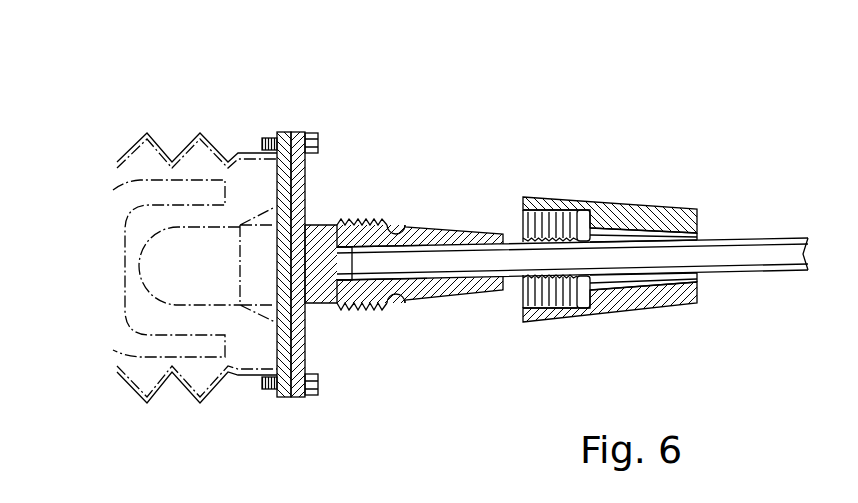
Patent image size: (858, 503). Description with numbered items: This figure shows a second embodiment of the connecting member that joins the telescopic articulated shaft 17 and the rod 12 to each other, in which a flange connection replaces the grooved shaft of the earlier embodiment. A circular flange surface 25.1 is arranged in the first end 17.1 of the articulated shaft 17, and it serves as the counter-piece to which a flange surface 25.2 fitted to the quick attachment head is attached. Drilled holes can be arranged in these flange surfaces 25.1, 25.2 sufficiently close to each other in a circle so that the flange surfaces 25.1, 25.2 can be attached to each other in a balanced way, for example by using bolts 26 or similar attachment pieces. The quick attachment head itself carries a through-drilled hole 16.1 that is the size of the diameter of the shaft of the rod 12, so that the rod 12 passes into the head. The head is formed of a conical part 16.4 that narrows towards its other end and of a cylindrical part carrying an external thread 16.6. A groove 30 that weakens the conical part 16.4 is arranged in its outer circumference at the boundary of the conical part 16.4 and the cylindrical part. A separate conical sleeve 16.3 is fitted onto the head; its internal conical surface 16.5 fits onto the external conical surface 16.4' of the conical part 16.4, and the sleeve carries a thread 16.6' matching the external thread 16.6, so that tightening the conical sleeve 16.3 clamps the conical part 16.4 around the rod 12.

The rod 12 is at (757, 252).
The through-drilled hole 16.1 is at (428, 272).
The conical sleeve 16.3 is at (630, 208).
The conical part 16.4 is at (455, 189).
The external conical surface 16.4' is at (541, 325).
The internal conical surface 16.5 is at (698, 255).
The external thread 16.6 is at (433, 311).
The matching thread of the conical sleeve 16.6' is at (566, 209).
The articulated shaft 17 is at (143, 502).
The first end of the articulated shaft 17.1 is at (238, 149).
The circular flange surface 25.1 is at (289, 352).
The flange surface 25.2 is at (307, 330).
The bolts 26 is at (318, 145).
The groove 30 is at (397, 226).